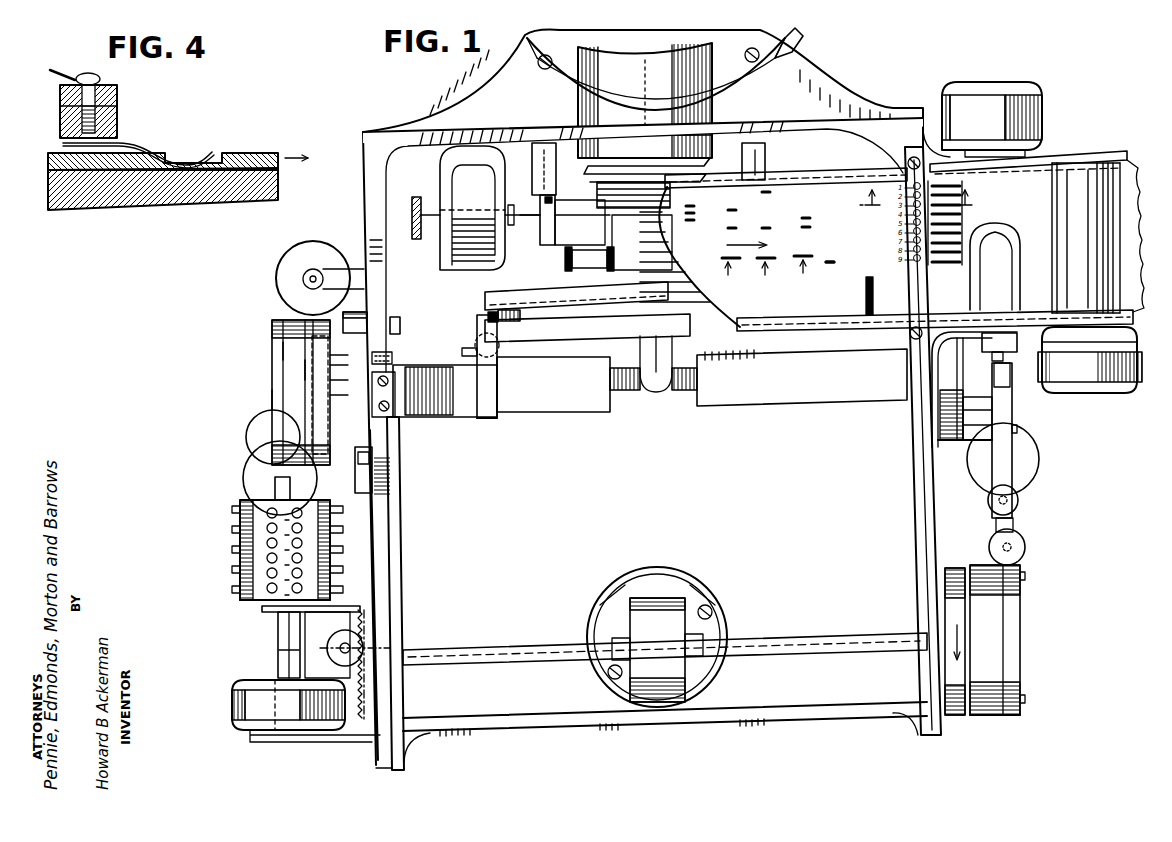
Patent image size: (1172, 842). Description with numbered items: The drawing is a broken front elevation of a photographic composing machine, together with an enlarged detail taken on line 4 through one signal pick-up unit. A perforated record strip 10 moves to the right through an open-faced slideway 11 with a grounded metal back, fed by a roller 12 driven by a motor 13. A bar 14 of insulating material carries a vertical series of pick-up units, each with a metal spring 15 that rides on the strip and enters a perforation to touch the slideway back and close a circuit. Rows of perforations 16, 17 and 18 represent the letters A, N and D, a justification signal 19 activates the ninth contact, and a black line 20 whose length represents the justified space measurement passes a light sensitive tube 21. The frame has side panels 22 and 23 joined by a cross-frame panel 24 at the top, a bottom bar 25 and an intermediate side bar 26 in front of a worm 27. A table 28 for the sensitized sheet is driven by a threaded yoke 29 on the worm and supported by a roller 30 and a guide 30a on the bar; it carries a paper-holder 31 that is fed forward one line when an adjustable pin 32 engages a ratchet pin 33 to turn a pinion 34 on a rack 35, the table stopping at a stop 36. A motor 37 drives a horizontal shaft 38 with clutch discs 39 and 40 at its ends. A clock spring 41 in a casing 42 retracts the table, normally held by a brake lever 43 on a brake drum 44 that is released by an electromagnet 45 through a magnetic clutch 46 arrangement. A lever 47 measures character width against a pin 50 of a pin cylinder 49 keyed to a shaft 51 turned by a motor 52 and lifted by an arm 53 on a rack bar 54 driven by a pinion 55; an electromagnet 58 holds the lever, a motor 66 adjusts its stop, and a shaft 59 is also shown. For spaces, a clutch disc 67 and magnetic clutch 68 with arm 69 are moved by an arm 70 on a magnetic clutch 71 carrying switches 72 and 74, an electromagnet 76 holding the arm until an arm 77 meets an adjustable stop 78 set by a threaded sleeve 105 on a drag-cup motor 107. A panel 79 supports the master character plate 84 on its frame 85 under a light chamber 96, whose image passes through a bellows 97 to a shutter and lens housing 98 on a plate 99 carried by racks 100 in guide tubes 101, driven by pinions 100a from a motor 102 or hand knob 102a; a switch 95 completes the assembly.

In FIG. 1, the section line 4 is at (916, 190).
In FIG. 4, the record strip 10 is at (248, 153).
In FIG. 1, the record strip 10 is at (790, 331).
In FIG. 4, the slideway 11 is at (165, 198).
In FIG. 1, the slideway 11 is at (850, 175).
In FIG. 1, the roller 12 is at (1128, 165).
In FIG. 1, the motor 13 is at (1118, 392).
In FIG. 4, the bar 14 is at (118, 100).
In FIG. 1, the bar 14 is at (910, 330).
In FIG. 4, the metal spring 15 is at (144, 143).
In FIG. 1, the row of perforations 16 is at (799, 276).
In FIG. 1, the row of perforations 17 is at (761, 278).
In FIG. 1, the row of perforations 18 is at (721, 278).
In FIG. 1, the justification signal 19 is at (836, 262).
In FIG. 1, the black line 20 is at (866, 298).
In FIG. 1, the light sensitive tube 21 is at (1016, 243).
In FIG. 1, the side panel 22 is at (400, 528).
In FIG. 1, the side panel 23 is at (921, 510).
In FIG. 1, the cross-frame panel 24 is at (508, 131).
In FIG. 1, the bottom bar 25 is at (548, 718).
In FIG. 1, the side bar 26 is at (545, 412).
In FIG. 1, the worm 27 is at (632, 391).
In FIG. 1, the table 28 is at (600, 332).
In FIG. 1, the threaded yoke 29 is at (685, 391).
In FIG. 1, the roller 30 is at (476, 342).
In FIG. 1, the guide 30a is at (487, 419).
In FIG. 1, the paper-holder 31 is at (512, 292).
In FIG. 1, the adjustable pin 32 is at (392, 357).
In FIG. 1, the ratchet pin 33 is at (462, 352).
In FIG. 1, the pinion 34 is at (520, 315).
In FIG. 1, the rack 35 is at (490, 313).
In FIG. 1, the stop 36 is at (400, 320).
In FIG. 1, the motor 37 is at (665, 598).
In FIG. 1, the horizontal shaft 38 is at (518, 650).
In FIG. 1, the clutch disc 39 is at (958, 566).
In FIG. 1, the clutch disc 40 is at (327, 645).
In FIG. 1, the clock spring 41 is at (364, 312).
In FIG. 1, the casing 42 is at (372, 433).
In FIG. 1, the brake lever 43 is at (300, 320).
In FIG. 1, the brake drum 44 is at (305, 371).
In FIG. 1, the electromagnet 45 is at (277, 266).
In FIG. 1, the magnetic clutch 46 is at (283, 349).
In FIG. 1, the lever 47 is at (273, 399).
In FIG. 1, the pin cylinder 49 is at (242, 598).
In FIG. 1, the pin 50 is at (232, 560).
In FIG. 1, the shaft 51 is at (275, 490).
In FIG. 1, the motor 52 is at (232, 714).
In FIG. 1, the arm 53 is at (264, 612).
In FIG. 1, the rack bar 54 is at (366, 632).
In FIG. 1, the pinion 55 is at (362, 650).
In FIG. 1, the electromagnet 58 is at (246, 437).
In FIG. 1, the shaft 59 is at (278, 652).
In FIG. 1, the motor 66 is at (243, 470).
In FIG. 1, the clutch disc 67 is at (948, 442).
In FIG. 1, the magnetic clutch 68 is at (992, 405).
In FIG. 1, the arm 69 is at (1010, 445).
In FIG. 1, the arm 70 is at (1013, 527).
In FIG. 1, the magnetic clutch 71 is at (996, 716).
In FIG. 1, the push button switch 72 is at (1025, 548).
In FIG. 1, the push button switch 74 is at (1018, 500).
In FIG. 1, the electromagnet 76 is at (1039, 459).
In FIG. 1, the arm 77 is at (1012, 374).
In FIG. 1, the adjustable stop 78 is at (995, 362).
In FIG. 1, the panel 79 is at (472, 100).
In FIG. 1, the master character plate 84 is at (762, 72).
In FIG. 1, the frame 85 is at (778, 48).
In FIG. 1, the switch 95 is at (585, 270).
In FIG. 1, the light chamber 96 is at (672, 47).
In FIG. 1, the expansion bellows enclosure 97 is at (708, 165).
In FIG. 1, the shutter and projecting lens housing 98 is at (642, 242).
In FIG. 1, the plate 99 is at (580, 243).
In FIG. 1, the rack 100 is at (540, 232).
In FIG. 1, the pinion 100a is at (552, 208).
In FIG. 1, the guide tube 101 is at (532, 158).
In FIG. 1, the motor 102 is at (440, 185).
In FIG. 1, the hand knob 102a is at (416, 241).
In FIG. 1, the threaded sleeve 105 is at (990, 338).
In FIG. 1, the drag-cup motor 107 is at (1002, 84).